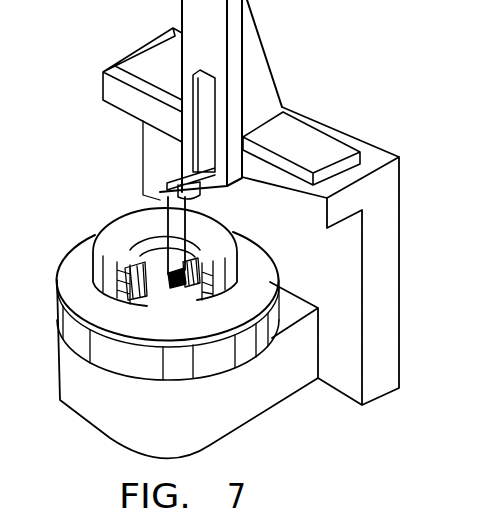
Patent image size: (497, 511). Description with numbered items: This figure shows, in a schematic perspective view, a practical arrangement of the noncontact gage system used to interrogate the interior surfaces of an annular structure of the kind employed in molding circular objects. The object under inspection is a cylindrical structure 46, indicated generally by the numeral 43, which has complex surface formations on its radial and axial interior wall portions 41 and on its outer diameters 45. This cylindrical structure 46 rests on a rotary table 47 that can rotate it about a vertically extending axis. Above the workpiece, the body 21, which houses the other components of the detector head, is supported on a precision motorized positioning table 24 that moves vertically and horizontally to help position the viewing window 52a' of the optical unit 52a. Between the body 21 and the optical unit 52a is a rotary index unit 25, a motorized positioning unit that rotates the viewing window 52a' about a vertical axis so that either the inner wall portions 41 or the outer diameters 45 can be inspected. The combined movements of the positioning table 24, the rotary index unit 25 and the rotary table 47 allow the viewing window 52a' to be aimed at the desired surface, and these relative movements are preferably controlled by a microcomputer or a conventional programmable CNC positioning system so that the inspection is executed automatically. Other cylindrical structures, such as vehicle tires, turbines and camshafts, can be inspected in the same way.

The body 21 is at (160, 200).
The precision motorized positioning table 24 is at (323, 111).
The rotary index unit 25 is at (210, 186).
The interior wall portions 41 is at (152, 299).
The cylindrical structure 43 is at (107, 240).
The outer diameters 45 is at (238, 283).
The cylindrical structure 46 is at (247, 252).
The rotary table 47 is at (92, 352).
The optical unit 52a is at (161, 375).
The viewing window 52a' is at (204, 360).